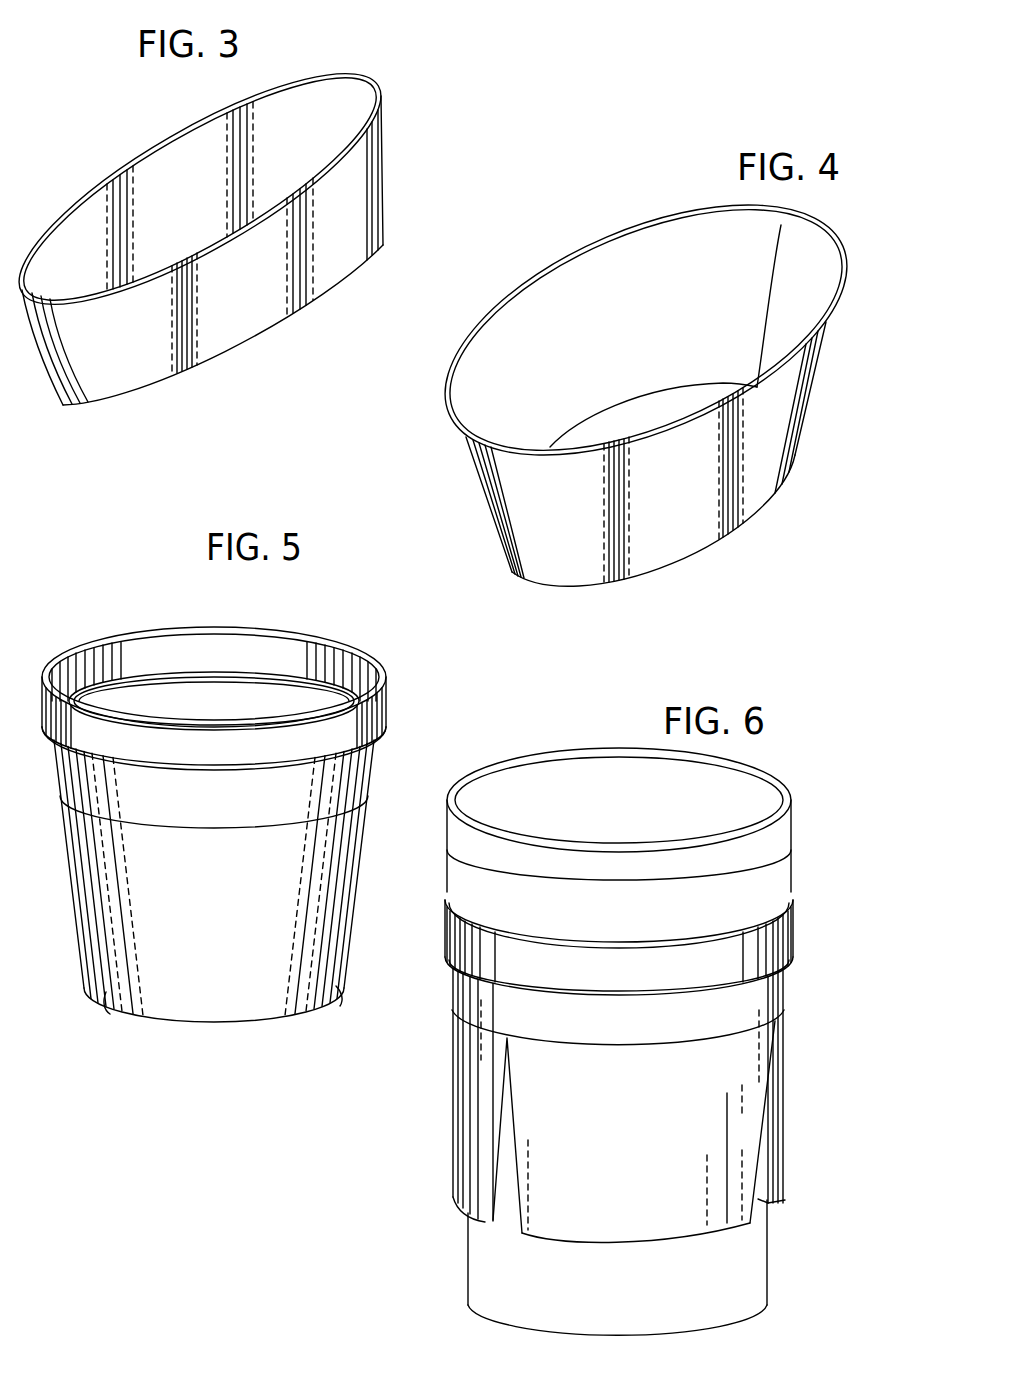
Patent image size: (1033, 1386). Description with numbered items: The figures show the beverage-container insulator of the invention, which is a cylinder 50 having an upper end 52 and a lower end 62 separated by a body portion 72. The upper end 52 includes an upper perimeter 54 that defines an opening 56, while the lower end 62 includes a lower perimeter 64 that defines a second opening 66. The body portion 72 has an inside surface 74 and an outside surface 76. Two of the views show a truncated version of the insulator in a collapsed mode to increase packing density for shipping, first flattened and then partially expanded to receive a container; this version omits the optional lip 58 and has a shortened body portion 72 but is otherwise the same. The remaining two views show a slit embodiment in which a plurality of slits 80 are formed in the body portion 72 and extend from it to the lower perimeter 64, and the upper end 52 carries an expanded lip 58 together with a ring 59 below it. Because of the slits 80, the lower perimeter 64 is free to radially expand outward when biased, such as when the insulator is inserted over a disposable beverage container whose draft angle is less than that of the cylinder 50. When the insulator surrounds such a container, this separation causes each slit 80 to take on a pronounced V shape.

In FIG. 3, the cylinder 50 is at (422, 145).
In FIG. 4, the cylinder 50 is at (448, 481).
In FIG. 5, the cylinder 50 is at (166, 610).
In FIG. 6, the cylinder 50 is at (782, 765).
In FIG. 3, the upper end 52 is at (170, 148).
In FIG. 4, the upper end 52 is at (745, 226).
In FIG. 5, the upper end 52 is at (262, 650).
In FIG. 6, the upper end 52 is at (612, 958).
In FIG. 3, the upper perimeter 54 is at (208, 123).
In FIG. 4, the upper perimeter 54 is at (447, 406).
In FIG. 5, the upper perimeter 54 is at (299, 640).
In FIG. 6, the upper perimeter 54 is at (763, 924).
In FIG. 3, the opening 56 is at (200, 201).
In FIG. 4, the opening 56 is at (691, 333).
In FIG. 5, the opening 56 is at (246, 716).
In FIG. 5, the lip 58 is at (395, 675).
In FIG. 6, the lip 58 is at (793, 891).
In FIG. 5, the shoulder ring 59 is at (84, 761).
In FIG. 6, the shoulder ring 59 is at (756, 972).
In FIG. 3, the lower end 62 is at (216, 363).
In FIG. 4, the lower end 62 is at (694, 556).
In FIG. 5, the lower end 62 is at (183, 998).
In FIG. 6, the lower end 62 is at (626, 1218).
In FIG. 3, the lower perimeter 64 is at (290, 309).
In FIG. 4, the lower perimeter 64 is at (749, 518).
In FIG. 5, the lower perimeter 64 is at (272, 1020).
In FIG. 6, the lower perimeter 64 is at (681, 1239).
In FIG. 4, the opening 66 is at (605, 402).
In FIG. 3, the body portion 72 is at (372, 181).
In FIG. 4, the body portion 72 is at (792, 414).
In FIG. 5, the body portion 72 is at (320, 886).
In FIG. 6, the body portion 72 is at (745, 1091).
In FIG. 3, the inside surface 74 is at (298, 110).
In FIG. 4, the inside surface 74 is at (597, 295).
In FIG. 5, the inside surface 74 is at (144, 712).
In FIG. 3, the outside surface 76 is at (233, 306).
In FIG. 4, the outside surface 76 is at (488, 499).
In FIG. 5, the outside surface 76 is at (85, 890).
In FIG. 6, the outside surface 76 is at (476, 1107).
In FIG. 5, the slits 80 is at (100, 1008).
In FIG. 6, the slits 80 is at (503, 1220).